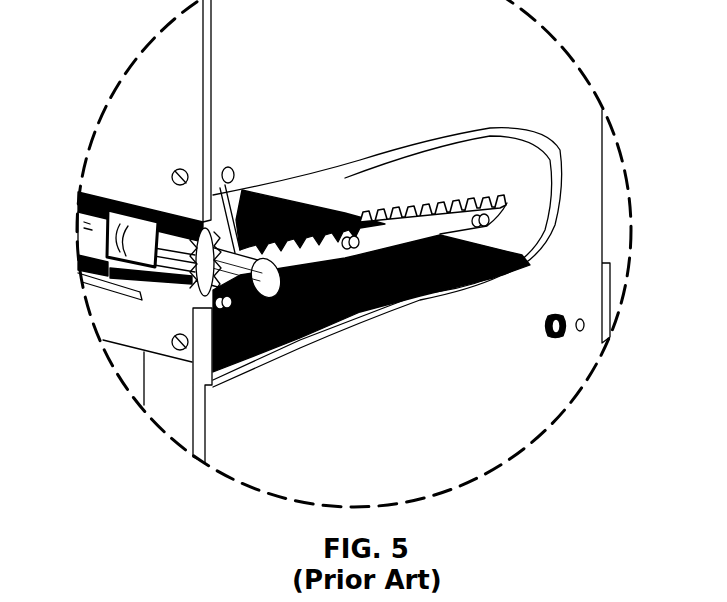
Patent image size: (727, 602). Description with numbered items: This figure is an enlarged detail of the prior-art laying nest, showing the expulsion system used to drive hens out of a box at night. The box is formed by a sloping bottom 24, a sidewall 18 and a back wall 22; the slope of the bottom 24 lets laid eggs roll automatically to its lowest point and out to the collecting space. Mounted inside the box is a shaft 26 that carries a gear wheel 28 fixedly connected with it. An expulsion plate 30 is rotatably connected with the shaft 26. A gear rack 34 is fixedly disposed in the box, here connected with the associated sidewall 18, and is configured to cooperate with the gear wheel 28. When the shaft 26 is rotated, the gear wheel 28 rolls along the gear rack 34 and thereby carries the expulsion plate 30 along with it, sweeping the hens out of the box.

The sidewall 18 is at (526, 408).
The back wall 22 is at (137, 85).
The bottom 24 is at (416, 280).
The shaft 26 is at (205, 294).
The gear wheel 28 is at (135, 292).
The expulsion plate 30 is at (235, 218).
The gear rack 34 is at (478, 225).